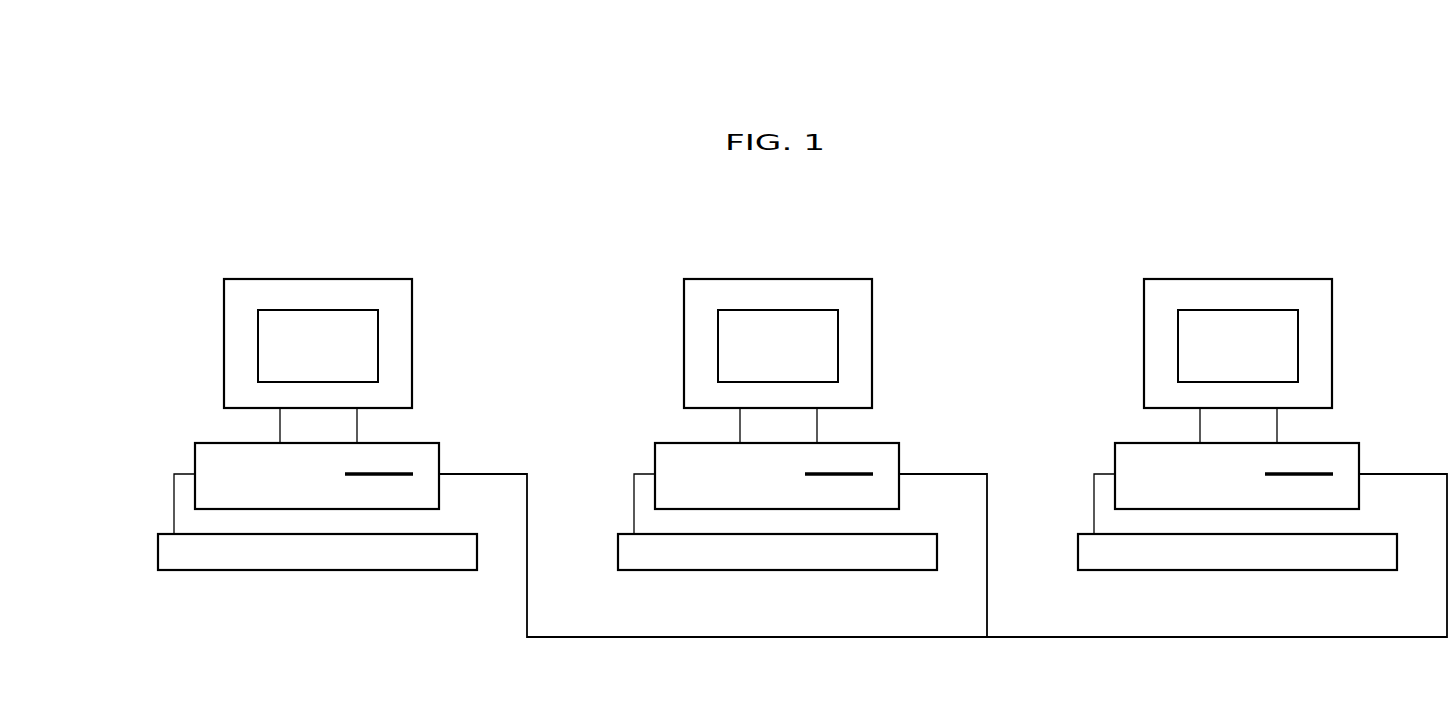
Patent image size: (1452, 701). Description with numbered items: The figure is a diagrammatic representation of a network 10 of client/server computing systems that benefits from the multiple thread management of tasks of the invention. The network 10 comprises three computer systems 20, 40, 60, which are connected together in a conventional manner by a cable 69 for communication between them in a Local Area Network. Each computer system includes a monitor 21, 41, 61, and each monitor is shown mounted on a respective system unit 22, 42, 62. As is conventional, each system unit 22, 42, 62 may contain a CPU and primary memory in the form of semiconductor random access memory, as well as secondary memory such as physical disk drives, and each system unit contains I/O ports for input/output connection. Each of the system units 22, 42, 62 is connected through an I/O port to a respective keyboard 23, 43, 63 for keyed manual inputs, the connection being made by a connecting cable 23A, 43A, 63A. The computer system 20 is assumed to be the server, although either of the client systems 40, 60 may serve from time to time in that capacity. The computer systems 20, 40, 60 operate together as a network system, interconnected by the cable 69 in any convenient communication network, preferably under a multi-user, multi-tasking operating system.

The network 10 is at (575, 223).
The computer system 20 is at (448, 392).
The monitor 21 is at (412, 293).
The system unit 22 is at (439, 462).
The keyboard 23 is at (433, 571).
The connecting cable 23A is at (173, 485).
The computer system 40 is at (908, 392).
The monitor 41 is at (872, 293).
The system unit 42 is at (899, 462).
The keyboard 43 is at (893, 571).
The connecting cable 43A is at (633, 485).
The computer system 60 is at (1368, 392).
The monitor 61 is at (1332, 293).
The system unit 62 is at (1359, 462).
The keyboard 63 is at (1353, 571).
The connecting cable 63A is at (1093, 485).
The cable 69 is at (762, 639).